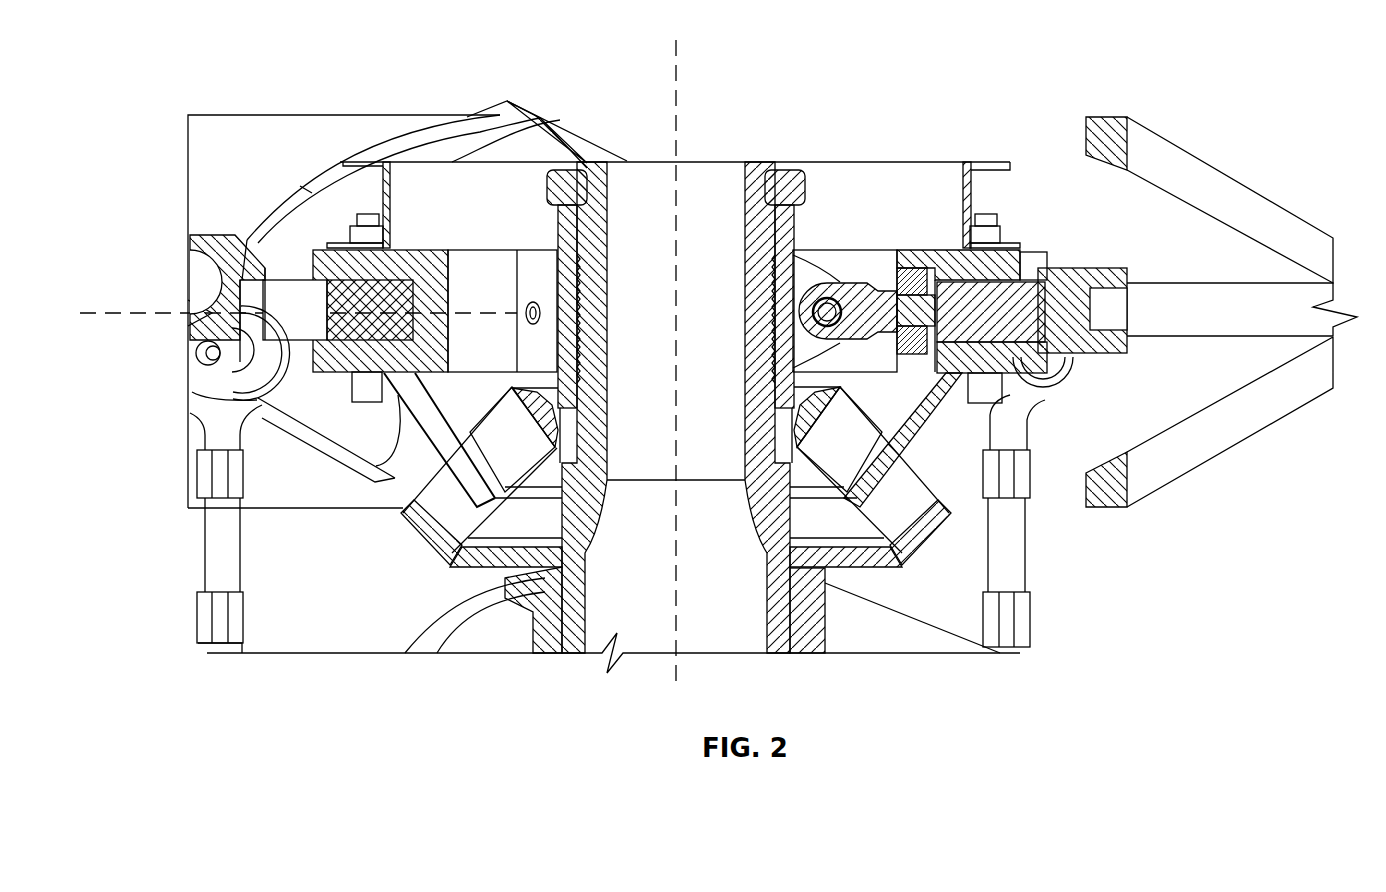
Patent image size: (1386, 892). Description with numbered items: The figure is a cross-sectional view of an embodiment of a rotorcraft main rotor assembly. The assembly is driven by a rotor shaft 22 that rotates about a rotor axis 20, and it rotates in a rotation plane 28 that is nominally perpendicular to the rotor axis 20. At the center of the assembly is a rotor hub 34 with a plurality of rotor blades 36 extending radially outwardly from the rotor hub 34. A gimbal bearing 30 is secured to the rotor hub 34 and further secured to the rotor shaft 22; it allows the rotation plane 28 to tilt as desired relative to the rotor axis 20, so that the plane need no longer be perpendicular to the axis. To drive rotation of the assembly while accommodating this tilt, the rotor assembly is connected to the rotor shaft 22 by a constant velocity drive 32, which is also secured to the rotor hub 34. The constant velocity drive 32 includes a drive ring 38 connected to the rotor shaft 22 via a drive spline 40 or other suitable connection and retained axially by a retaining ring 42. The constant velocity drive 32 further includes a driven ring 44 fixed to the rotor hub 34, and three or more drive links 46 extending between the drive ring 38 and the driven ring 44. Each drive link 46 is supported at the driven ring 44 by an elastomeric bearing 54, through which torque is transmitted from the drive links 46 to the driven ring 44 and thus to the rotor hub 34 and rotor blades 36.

The rotor axis 20 is at (676, 58).
The rotor shaft 22 is at (578, 636).
The rotation plane 28 is at (130, 315).
The gimbal bearing 30 is at (415, 530).
The constant velocity drive 32 is at (820, 262).
The rotor hub 34 is at (385, 300).
The rotor blades 36 is at (212, 195).
The drive ring 38 is at (567, 233).
The drive spline 40 is at (505, 108).
The retaining ring 42 is at (785, 186).
The driven ring 44 is at (1002, 255).
The drive links 46 is at (848, 323).
The elastomeric bearing 54 is at (912, 275).